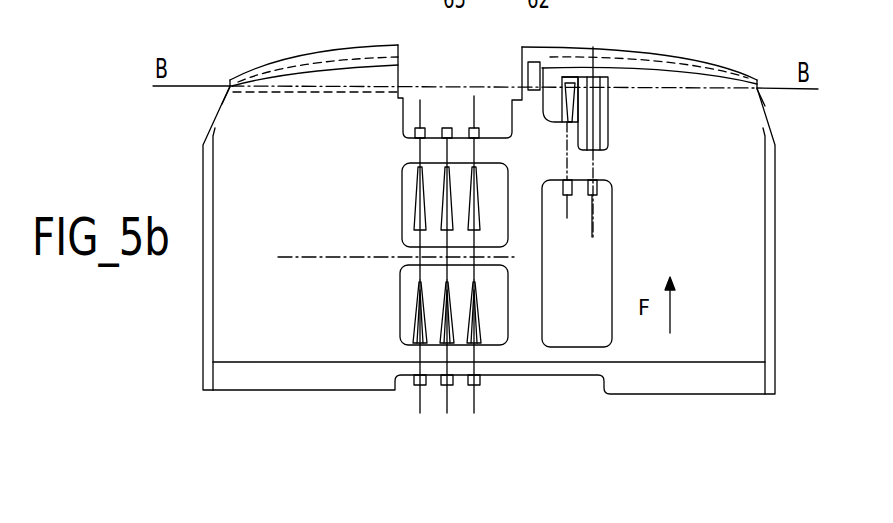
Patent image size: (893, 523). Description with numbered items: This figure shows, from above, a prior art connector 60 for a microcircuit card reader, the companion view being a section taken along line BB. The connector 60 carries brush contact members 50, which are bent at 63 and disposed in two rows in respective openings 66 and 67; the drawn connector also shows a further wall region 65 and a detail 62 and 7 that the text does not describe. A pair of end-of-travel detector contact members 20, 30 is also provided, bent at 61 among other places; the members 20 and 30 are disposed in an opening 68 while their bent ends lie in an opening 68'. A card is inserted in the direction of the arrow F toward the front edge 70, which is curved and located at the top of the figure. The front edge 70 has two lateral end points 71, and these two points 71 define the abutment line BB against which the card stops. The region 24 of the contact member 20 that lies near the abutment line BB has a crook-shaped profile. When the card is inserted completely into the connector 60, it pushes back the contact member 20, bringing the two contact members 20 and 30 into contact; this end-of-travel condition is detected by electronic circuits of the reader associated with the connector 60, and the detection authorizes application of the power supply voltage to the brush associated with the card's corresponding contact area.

The connector 60 is at (203, 180).
The side wall 65 is at (208, 322).
The front edge 70 is at (322, 64).
The lateral end points 71 is at (232, 82).
The bend of the brush contact members 63 is at (447, 128).
The brush contact members 50 is at (401, 182).
The opening 66 is at (403, 240).
The opening 67 is at (400, 272).
The end of travel detector contact member 30 is at (553, 95).
The socket 7 is at (560, 124).
The region of the contact member 24 is at (604, 95).
The end of travel detector contact member 20 is at (601, 118).
The opening 68 is at (629, 157).
The pin 62 is at (566, 200).
The bend of detector contact member 61 is at (612, 202).
The opening 68' is at (614, 263).